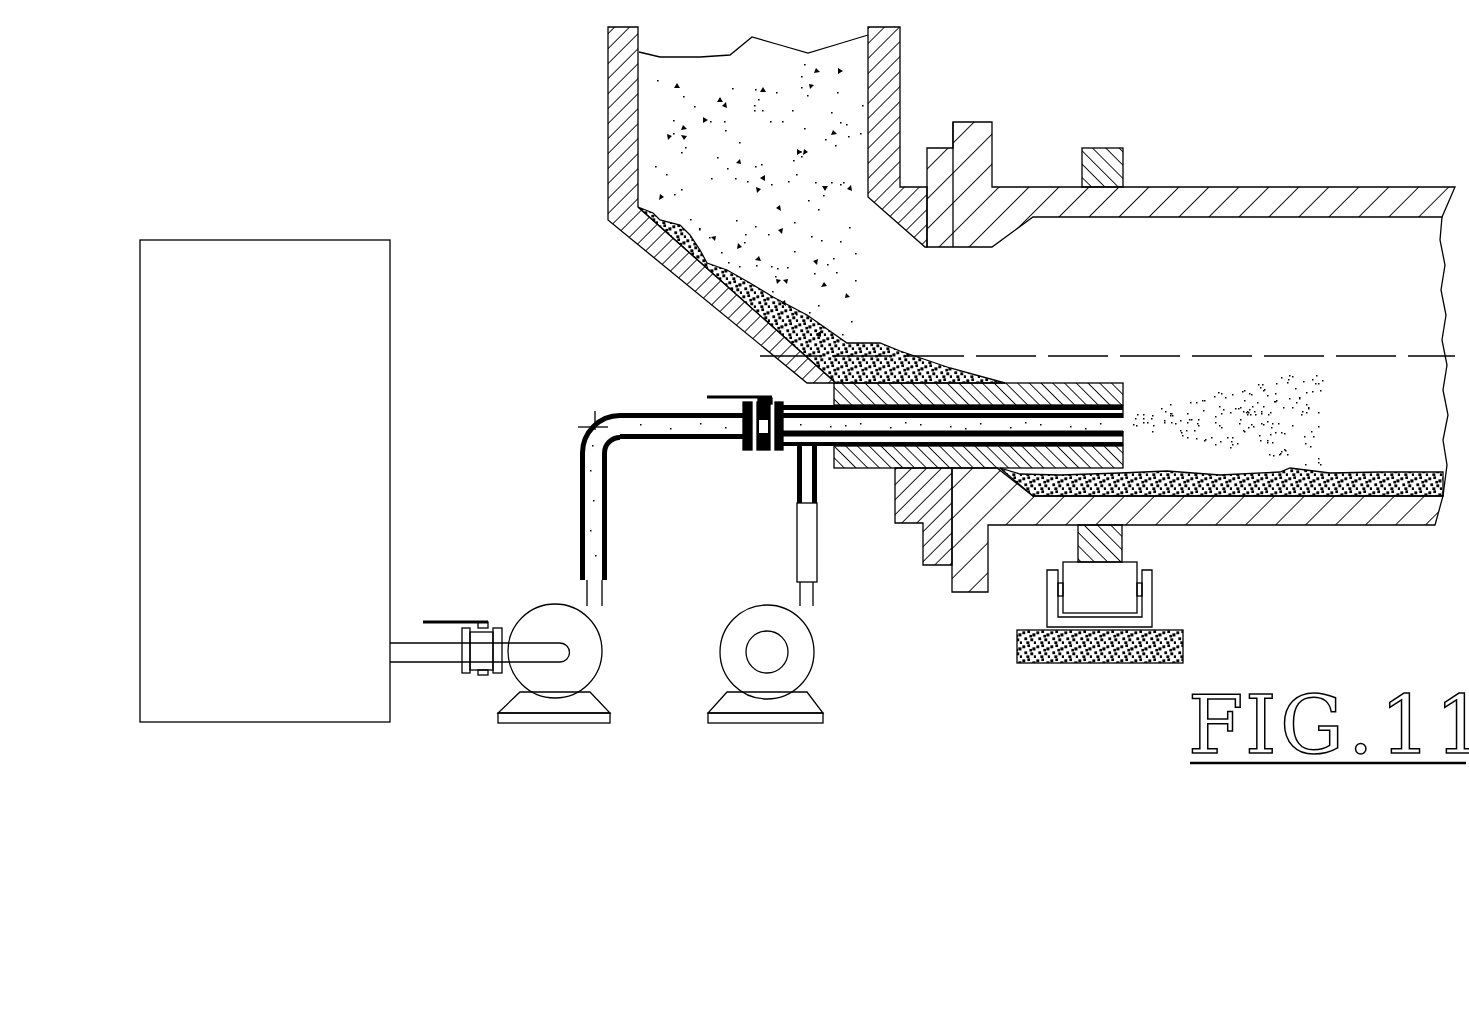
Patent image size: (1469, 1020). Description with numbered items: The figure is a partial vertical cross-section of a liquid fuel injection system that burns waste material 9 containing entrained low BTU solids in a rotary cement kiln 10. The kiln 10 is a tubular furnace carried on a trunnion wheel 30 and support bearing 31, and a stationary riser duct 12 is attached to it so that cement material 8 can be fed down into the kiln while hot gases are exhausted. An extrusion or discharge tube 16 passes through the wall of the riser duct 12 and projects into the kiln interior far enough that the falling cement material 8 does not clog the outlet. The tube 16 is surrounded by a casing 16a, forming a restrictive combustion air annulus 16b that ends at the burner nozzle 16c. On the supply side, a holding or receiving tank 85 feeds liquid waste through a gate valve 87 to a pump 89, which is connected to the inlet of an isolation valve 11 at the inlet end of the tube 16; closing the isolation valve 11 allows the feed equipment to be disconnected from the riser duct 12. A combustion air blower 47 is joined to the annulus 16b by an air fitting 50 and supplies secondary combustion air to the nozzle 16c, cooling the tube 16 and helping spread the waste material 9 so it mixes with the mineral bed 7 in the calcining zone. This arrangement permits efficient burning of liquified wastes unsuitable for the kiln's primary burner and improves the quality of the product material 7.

The mineral bed 7 is at (900, 350).
The cement material 8 is at (787, 137).
The waste material 9 is at (1328, 416).
The kiln 10 is at (1343, 181).
The isolation valve 11 is at (764, 384).
The riser duct 12 is at (608, 127).
The extrusion or discharge tube 16 is at (1084, 379).
The casing 16a is at (1035, 402).
The combustion air annulus 16b is at (863, 440).
The burner nozzle 16c is at (1133, 412).
The trunnion wheel 30 is at (1127, 168).
The support bearing 31 is at (1153, 606).
The combustion air blower 47 is at (805, 660).
The air fitting 50 is at (797, 527).
The holding or receiving tank 85 is at (236, 484).
The gate valve 87 is at (485, 606).
The pump 89 is at (603, 648).